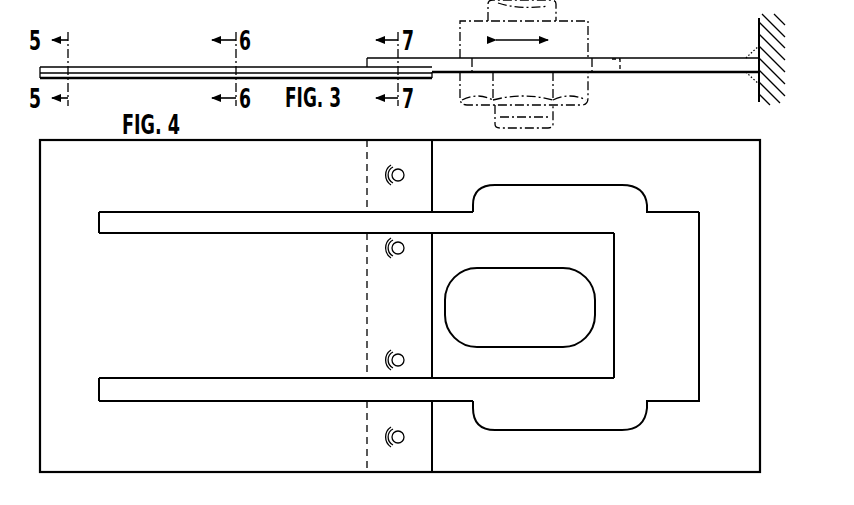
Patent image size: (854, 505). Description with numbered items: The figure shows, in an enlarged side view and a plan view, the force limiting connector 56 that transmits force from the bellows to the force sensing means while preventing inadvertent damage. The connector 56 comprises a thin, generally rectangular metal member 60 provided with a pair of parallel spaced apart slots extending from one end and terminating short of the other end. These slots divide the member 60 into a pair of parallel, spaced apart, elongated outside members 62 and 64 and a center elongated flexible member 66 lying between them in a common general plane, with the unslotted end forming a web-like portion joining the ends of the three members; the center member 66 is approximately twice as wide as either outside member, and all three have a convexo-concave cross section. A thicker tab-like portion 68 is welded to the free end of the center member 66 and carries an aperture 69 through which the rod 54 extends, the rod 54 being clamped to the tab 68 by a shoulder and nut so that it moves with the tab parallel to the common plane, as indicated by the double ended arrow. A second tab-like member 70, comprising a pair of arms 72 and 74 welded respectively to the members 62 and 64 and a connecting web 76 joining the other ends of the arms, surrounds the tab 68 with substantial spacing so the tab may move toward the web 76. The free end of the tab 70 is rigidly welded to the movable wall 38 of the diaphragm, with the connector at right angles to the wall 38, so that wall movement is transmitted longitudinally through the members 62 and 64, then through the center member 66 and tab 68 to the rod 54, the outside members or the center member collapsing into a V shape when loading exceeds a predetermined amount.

In FIG. 3, the movable wall 38 is at (758, 31).
In FIG. 3, the rod 54 is at (558, 13).
In FIG. 3, the force limiting connector 56 is at (297, 46).
In FIG. 3, the rectangular metal member 60 is at (158, 56).
In FIG. 4, the rectangular metal member 60 is at (278, 482).
In FIG. 4, the elongated member 62 is at (246, 443).
In FIG. 3, the elongated member 64 is at (105, 67).
In FIG. 4, the elongated member 64 is at (238, 187).
In FIG. 4, the center elongated flexible member 66 is at (251, 316).
In FIG. 3, the tab-like portion 68 is at (620, 74).
In FIG. 4, the tab-like portion 68 is at (599, 258).
In FIG. 4, the aperture 69 is at (538, 318).
In FIG. 3, the second tab-like member 70 is at (670, 38).
In FIG. 4, the arm 72 is at (588, 459).
In FIG. 4, the arm 74 is at (579, 170).
In FIG. 4, the connecting web 76 is at (738, 303).